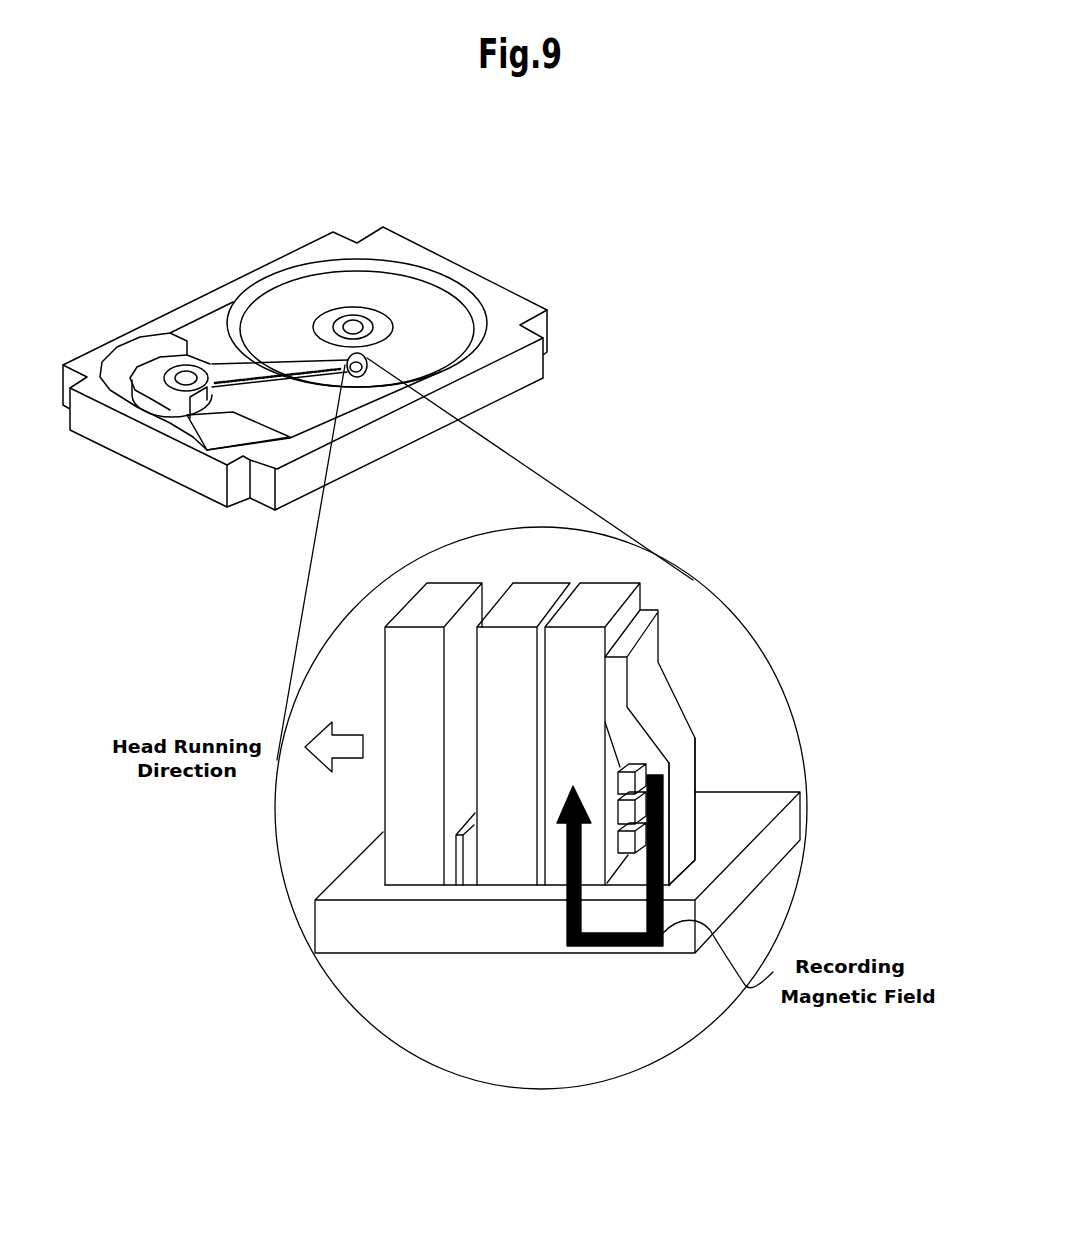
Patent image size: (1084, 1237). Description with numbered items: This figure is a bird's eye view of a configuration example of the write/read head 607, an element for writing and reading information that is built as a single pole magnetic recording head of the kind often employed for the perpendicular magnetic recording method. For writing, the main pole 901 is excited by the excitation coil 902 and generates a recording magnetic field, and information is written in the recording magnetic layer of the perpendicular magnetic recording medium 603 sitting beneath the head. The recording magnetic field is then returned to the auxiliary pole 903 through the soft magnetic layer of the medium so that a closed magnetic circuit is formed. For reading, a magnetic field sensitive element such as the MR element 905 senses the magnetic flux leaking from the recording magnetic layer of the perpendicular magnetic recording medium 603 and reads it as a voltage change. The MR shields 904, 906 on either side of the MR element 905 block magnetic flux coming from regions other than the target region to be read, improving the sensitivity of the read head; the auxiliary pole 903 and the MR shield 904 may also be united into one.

The perpendicular magnetic recording medium 603 is at (727, 902).
The write/read head 607 is at (650, 593).
The main pole 901 is at (680, 805).
The excitation coil 902 is at (623, 767).
The auxiliary pole 903 is at (598, 600).
The MR shield 904 is at (493, 862).
The MR element 905 is at (462, 880).
The MR shield 906 is at (435, 612).